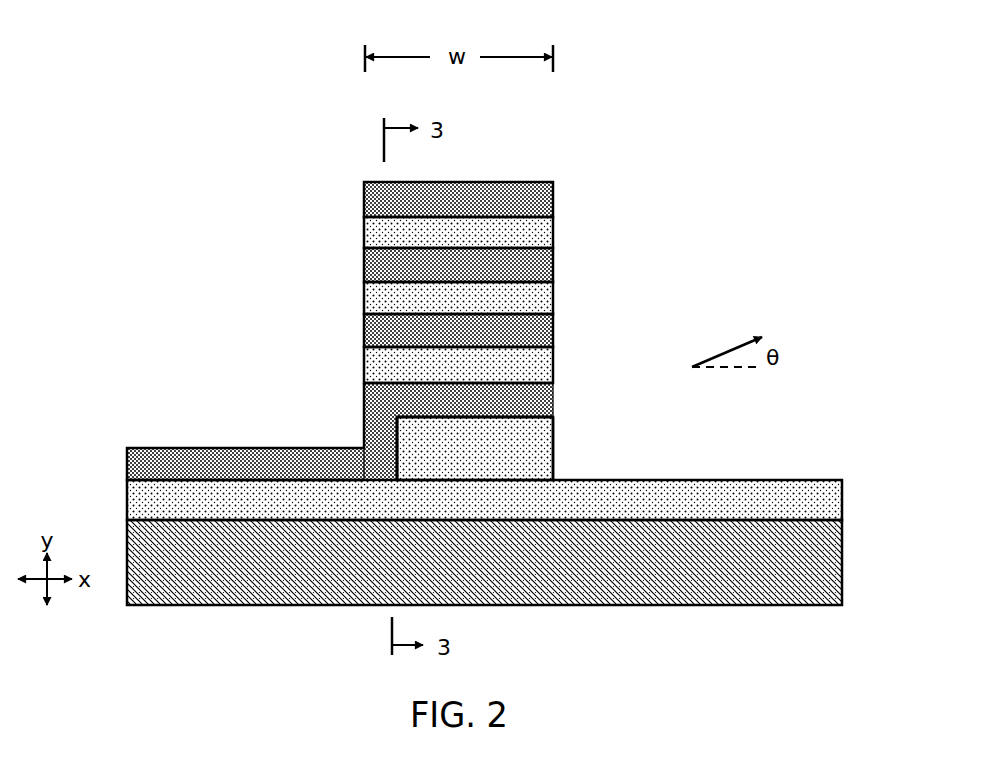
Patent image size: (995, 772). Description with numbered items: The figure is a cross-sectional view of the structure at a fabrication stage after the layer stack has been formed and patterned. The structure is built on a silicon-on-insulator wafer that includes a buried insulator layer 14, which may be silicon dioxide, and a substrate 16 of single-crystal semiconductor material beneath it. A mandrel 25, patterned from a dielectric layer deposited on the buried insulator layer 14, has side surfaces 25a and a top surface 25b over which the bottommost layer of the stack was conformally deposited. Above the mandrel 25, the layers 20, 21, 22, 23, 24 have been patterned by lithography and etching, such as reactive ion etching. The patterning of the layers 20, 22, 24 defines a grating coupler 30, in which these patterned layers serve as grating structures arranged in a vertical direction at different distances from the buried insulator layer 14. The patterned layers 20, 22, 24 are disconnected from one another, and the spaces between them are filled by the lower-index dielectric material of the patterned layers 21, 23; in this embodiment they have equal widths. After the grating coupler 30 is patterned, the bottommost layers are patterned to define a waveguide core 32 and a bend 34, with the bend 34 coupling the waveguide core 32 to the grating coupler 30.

The buried insulator layer 14 is at (810, 503).
The substrate 16 is at (810, 575).
The layer 20 is at (390, 333).
The layer 21 is at (528, 303).
The layer 22 is at (390, 268).
The layer 23 is at (528, 235).
The layer 24 is at (390, 203).
The mandrel 25 is at (478, 452).
The side surfaces 25a is at (398, 437).
The top surface 25b is at (503, 416).
The grating coupler 30 is at (245, 228).
The waveguide core 32 is at (160, 462).
The bend 34 is at (388, 404).